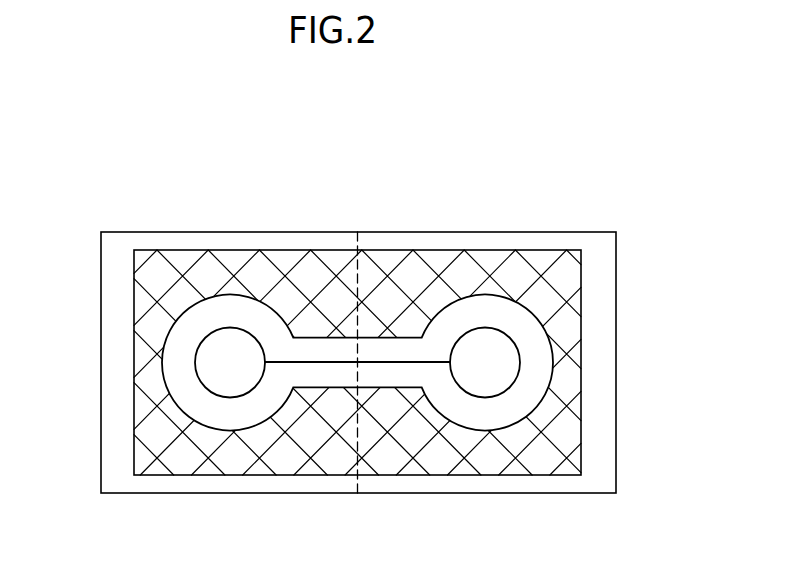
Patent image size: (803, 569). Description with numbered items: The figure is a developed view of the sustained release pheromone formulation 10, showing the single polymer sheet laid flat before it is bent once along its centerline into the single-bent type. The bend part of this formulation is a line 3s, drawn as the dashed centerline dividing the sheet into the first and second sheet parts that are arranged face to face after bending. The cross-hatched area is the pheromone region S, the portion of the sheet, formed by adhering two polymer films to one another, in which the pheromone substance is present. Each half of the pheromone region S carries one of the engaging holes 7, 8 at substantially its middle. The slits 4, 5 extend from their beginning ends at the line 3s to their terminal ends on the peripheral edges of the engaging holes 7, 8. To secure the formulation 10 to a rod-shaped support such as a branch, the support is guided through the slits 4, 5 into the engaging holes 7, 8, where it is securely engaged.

The sustained release pheromone formulation 10 is at (240, 198).
The pheromone region S is at (542, 268).
The line 3s is at (358, 268).
The slit 4 is at (325, 388).
The slit 5 is at (395, 388).
The engaging hole 7 is at (196, 352).
The engaging hole 8 is at (510, 340).